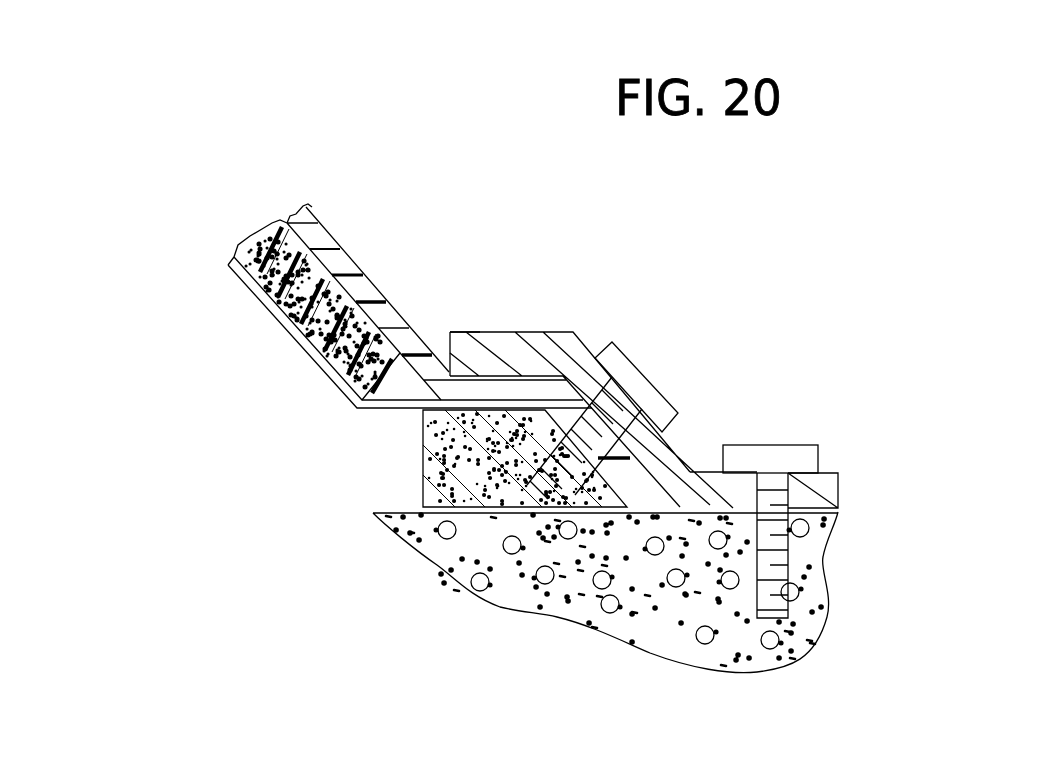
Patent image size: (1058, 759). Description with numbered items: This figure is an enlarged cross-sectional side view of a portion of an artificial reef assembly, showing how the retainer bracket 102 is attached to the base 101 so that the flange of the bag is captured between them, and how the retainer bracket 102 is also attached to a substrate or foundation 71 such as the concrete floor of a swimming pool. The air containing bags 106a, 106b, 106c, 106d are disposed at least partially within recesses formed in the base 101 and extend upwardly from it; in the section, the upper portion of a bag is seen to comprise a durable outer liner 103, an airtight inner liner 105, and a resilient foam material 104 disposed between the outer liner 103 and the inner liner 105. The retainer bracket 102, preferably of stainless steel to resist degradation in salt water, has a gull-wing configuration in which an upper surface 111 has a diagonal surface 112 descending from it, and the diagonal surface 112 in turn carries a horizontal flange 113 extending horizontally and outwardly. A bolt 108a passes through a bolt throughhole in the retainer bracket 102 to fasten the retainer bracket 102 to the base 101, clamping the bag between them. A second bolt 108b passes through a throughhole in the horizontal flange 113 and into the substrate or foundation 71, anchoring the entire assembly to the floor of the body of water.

The substrate or foundation 71 is at (827, 548).
The base 101 is at (418, 459).
The retainer bracket 102 is at (537, 332).
The outer liner 103 is at (358, 262).
The resilient foam material 104 is at (258, 218).
The inner liner 105 is at (280, 322).
The air containing bag 106a is at (244, 255).
The air containing bag 106b is at (244, 255).
The air containing bag 106c is at (244, 255).
The air containing bag 106d is at (233, 226).
The bolt 108a is at (615, 342).
The bolt 108b is at (782, 444).
The upper surface 111 is at (462, 332).
The diagonal surface 112 is at (672, 452).
The horizontal flange 113 is at (845, 487).